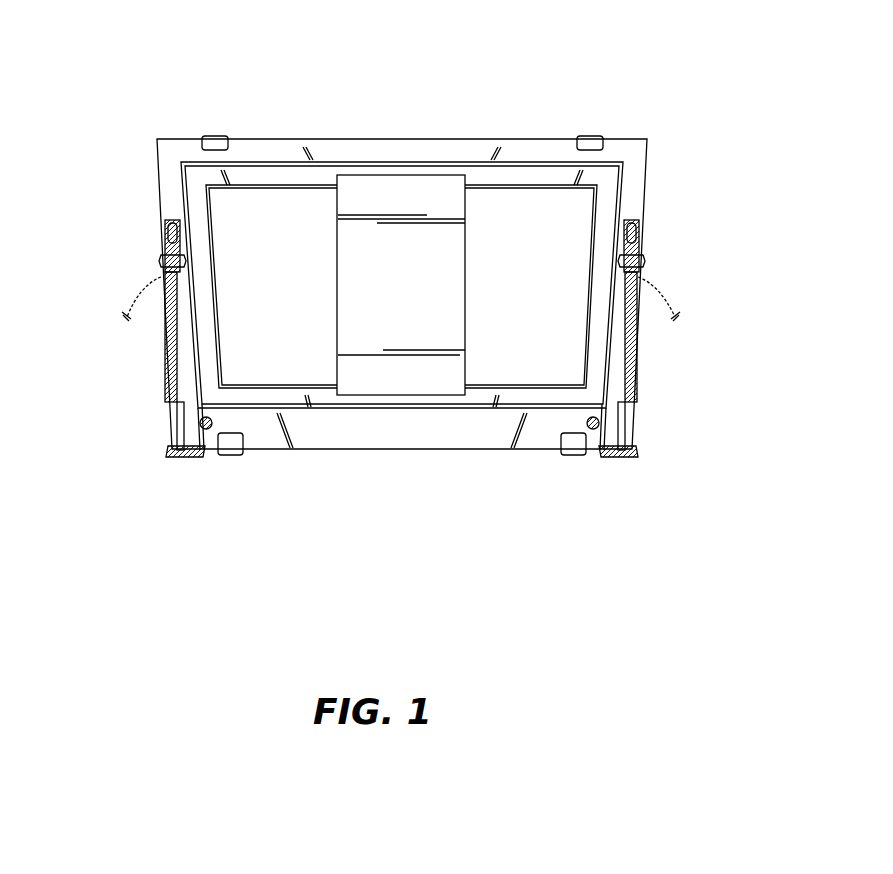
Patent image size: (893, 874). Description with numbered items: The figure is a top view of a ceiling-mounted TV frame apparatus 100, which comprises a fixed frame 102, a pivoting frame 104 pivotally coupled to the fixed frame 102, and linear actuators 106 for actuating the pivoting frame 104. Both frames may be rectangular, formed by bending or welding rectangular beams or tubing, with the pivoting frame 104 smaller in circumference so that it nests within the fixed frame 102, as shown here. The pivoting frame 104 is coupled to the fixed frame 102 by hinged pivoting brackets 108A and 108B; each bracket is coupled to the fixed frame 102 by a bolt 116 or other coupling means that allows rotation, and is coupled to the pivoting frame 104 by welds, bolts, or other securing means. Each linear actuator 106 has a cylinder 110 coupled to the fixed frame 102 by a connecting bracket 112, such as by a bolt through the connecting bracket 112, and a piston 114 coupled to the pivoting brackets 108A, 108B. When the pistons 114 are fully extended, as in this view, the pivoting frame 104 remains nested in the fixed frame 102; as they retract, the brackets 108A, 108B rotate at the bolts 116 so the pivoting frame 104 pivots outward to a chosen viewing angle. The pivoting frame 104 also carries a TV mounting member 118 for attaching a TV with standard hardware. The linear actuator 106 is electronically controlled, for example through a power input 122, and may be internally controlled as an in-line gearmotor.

The ceiling-mounted TV frame apparatus 100 is at (424, 56).
The fixed frame 102 is at (528, 150).
The pivoting frame 104 is at (275, 178).
The linear actuator 106 is at (158, 384).
The pivoting bracket 108A is at (195, 413).
The pivoting bracket 108B is at (608, 413).
The cylinder 110 is at (180, 322).
The connecting bracket 112 is at (163, 245).
The piston 114 is at (178, 427).
The bolt 116 is at (213, 425).
The TV mounting member 118 is at (415, 296).
The power input 122 is at (665, 293).